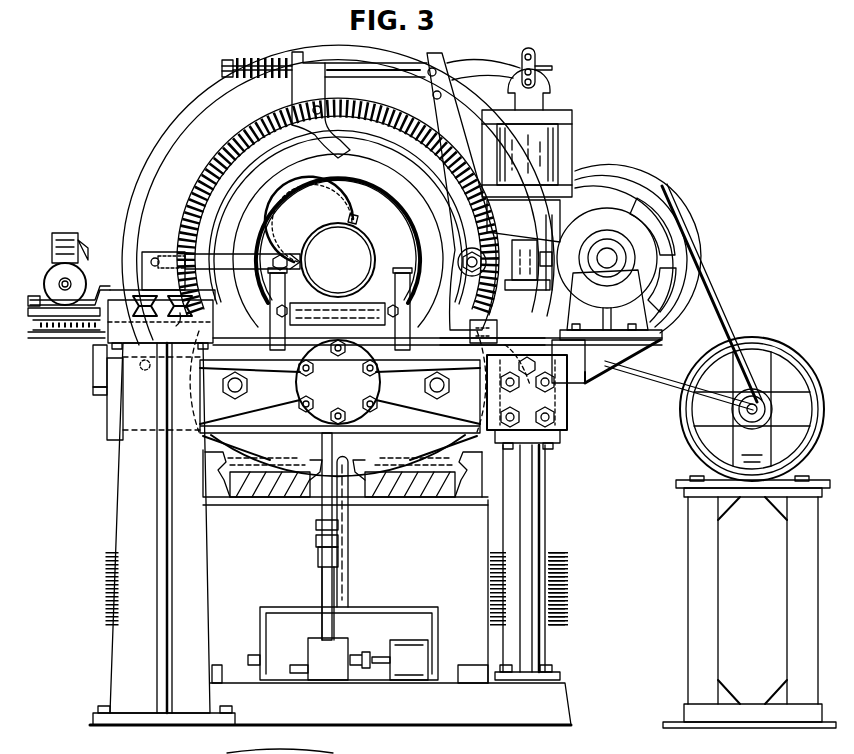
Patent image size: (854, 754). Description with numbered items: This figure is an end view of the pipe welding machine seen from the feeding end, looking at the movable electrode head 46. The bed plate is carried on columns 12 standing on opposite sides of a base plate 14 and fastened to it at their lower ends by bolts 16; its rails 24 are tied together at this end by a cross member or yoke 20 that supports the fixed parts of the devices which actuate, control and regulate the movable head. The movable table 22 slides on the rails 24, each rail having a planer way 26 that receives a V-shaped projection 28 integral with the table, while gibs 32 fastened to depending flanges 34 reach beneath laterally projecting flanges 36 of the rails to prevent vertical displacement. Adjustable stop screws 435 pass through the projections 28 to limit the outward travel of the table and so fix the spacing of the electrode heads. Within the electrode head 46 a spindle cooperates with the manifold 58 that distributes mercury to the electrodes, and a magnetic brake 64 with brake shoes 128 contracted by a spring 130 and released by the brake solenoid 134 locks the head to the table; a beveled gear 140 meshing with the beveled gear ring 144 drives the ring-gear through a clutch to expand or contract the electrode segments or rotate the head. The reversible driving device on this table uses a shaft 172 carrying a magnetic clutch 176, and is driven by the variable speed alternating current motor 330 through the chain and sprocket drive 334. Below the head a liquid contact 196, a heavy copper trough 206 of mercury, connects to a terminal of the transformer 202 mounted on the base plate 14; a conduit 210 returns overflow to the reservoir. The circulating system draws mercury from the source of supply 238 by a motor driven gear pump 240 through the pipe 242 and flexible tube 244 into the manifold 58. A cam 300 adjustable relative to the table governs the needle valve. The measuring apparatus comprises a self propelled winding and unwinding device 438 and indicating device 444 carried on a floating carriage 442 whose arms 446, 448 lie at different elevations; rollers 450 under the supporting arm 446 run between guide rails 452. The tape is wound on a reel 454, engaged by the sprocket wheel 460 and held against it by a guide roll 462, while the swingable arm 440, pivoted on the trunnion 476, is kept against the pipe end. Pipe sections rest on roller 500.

The columns 12 is at (540, 490).
The base plate 14 is at (562, 692).
The bolts 16 is at (507, 680).
The cross member or yoke 20 is at (338, 403).
The movable table 22 is at (585, 356).
The rails 24 is at (538, 353).
The planer way 26 is at (507, 361).
The V-shaped projections 28 is at (568, 413).
The gibs 32 is at (95, 392).
The depending flanges 34 is at (586, 383).
The laterally projecting flanges 36 is at (568, 398).
The electrode head 46 is at (178, 125).
The manifold 58 is at (328, 165).
The magnetic brake 64 is at (427, 178).
The brake shoes 128 is at (250, 197).
The spring 130 is at (268, 60).
The brake solenoid 134 is at (552, 144).
The beveled gear 140 is at (520, 279).
The beveled gear ring 144 is at (205, 162).
The shaft 172 is at (612, 250).
The magnetic clutch 176 is at (645, 215).
The liquid contact 196 is at (222, 500).
The transformer 202 is at (488, 525).
The trough 206 is at (372, 500).
The conduit 210 is at (350, 581).
The source of supply 238 is at (400, 618).
The motor driven gear pump 240 is at (328, 680).
The pipe 242 is at (320, 576).
The flexible tube 244 is at (322, 515).
The cam 300 is at (436, 301).
The variable speed alternating current motor 330 is at (780, 340).
The chain and sprocket drive 334 is at (704, 255).
The adjustable stop screws 435 is at (140, 388).
The self propelled winding and unwinding device 438 is at (52, 270).
The swingable arm 440 is at (330, 221).
The floating carriage 442 is at (93, 244).
The indicating device 444 is at (66, 232).
The supporting arm 446 is at (112, 286).
The arm 448 is at (36, 296).
The rollers 450 is at (178, 316).
The guide rails 452 is at (208, 300).
The reel 454 is at (58, 322).
The sprocket wheel 460 is at (42, 330).
The guide roll 462 is at (88, 338).
The support or trunnion 476 is at (158, 252).
The roller 500 is at (362, 295).